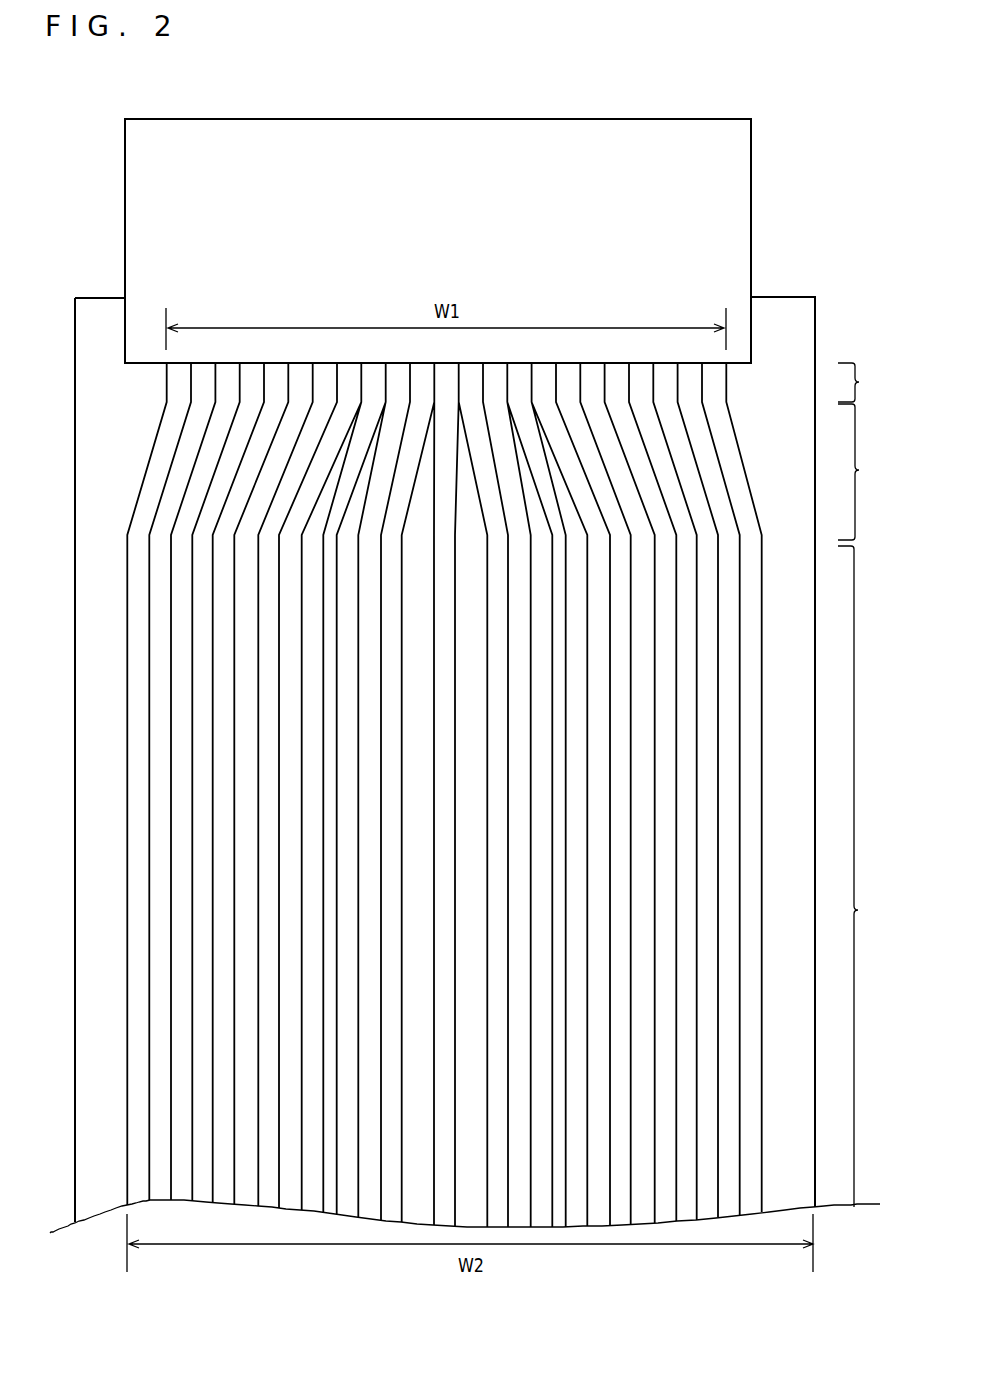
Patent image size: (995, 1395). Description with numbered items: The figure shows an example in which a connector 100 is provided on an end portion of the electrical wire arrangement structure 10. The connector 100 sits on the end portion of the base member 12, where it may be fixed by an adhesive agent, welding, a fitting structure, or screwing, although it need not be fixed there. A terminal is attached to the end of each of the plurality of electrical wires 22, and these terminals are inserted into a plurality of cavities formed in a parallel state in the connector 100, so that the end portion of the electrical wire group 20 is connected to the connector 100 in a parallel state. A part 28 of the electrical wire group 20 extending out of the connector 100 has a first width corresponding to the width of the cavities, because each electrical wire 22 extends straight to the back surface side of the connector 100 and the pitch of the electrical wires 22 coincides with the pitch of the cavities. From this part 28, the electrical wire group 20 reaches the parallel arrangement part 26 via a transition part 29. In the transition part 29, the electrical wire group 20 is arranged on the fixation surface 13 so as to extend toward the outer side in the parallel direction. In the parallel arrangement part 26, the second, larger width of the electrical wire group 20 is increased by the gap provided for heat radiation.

The electrical wire arrangement structure 10 is at (65, 417).
The connector 100 is at (752, 172).
The base member 12 is at (829, 343).
The fixation surface 13 is at (786, 312).
The electrical wire group 20 is at (412, 779).
The electrical wire 22 is at (456, 365).
The parallel arrangement part 26 is at (869, 876).
The part of the electrical wire group extending out of the connector 28 is at (869, 382).
The transition part 29 is at (869, 472).